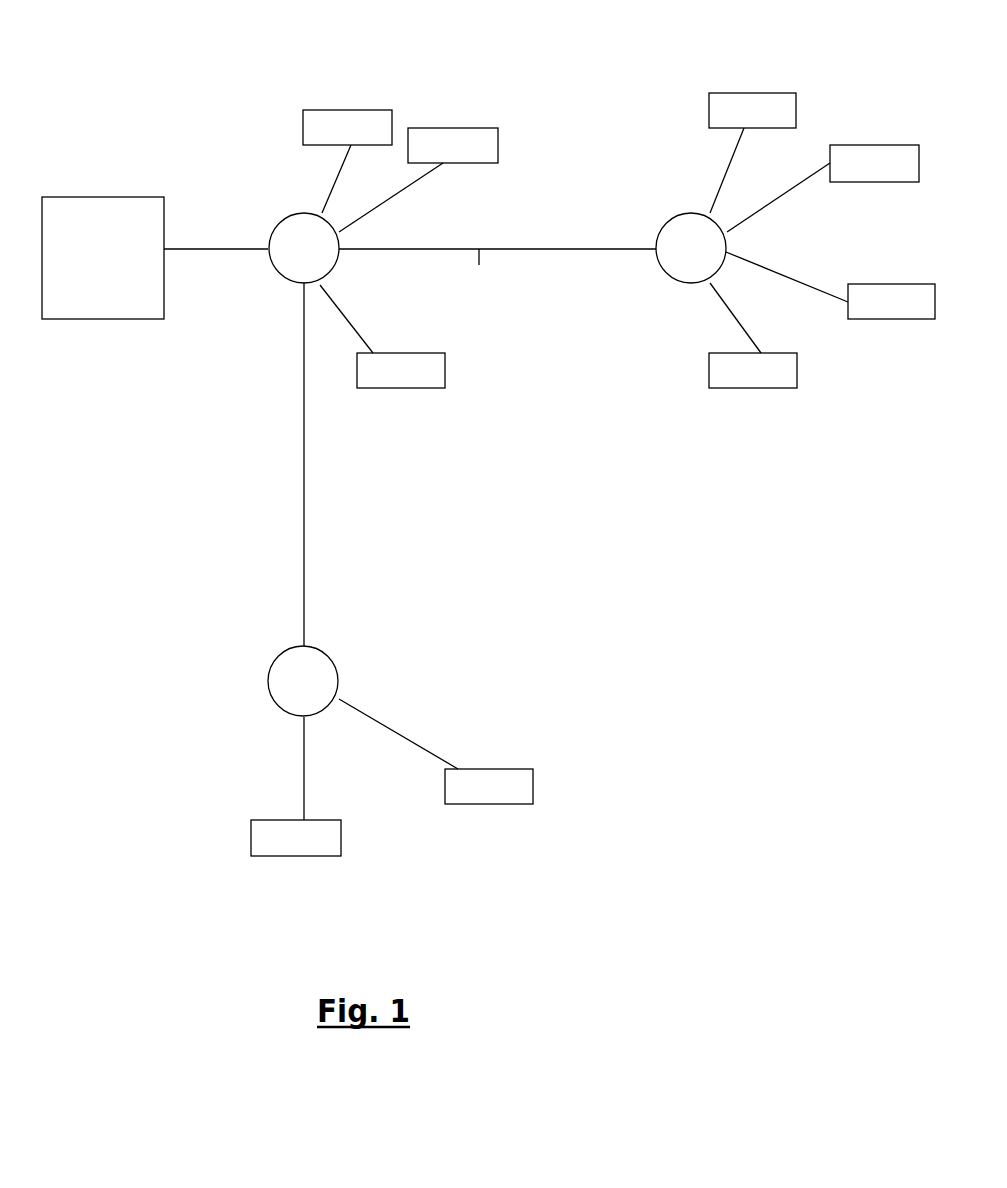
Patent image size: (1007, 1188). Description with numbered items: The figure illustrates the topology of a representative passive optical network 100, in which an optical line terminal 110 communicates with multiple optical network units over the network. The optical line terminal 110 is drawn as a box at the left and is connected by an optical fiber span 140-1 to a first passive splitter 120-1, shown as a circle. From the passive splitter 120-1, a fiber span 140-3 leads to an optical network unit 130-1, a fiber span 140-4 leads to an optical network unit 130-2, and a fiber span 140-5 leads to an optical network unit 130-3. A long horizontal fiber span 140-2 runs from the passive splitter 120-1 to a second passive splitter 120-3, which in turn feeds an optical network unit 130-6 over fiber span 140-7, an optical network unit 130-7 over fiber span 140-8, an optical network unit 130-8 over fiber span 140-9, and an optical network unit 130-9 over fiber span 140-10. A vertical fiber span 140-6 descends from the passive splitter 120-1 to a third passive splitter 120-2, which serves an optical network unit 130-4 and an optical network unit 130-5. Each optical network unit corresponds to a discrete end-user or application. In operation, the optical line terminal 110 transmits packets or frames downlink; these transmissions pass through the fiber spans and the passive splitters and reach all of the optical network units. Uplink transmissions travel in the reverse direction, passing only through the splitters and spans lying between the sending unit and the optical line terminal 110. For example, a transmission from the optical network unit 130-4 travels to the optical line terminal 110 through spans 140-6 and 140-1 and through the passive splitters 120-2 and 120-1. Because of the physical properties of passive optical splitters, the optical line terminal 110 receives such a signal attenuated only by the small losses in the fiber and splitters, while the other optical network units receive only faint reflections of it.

The passive optical network 100 is at (533, 75).
The optical line terminal 110 is at (103, 258).
The passive splitter 120-1 is at (268, 268).
The passive splitter 120-2 is at (268, 700).
The passive splitter 120-3 is at (657, 268).
The optical network unit 130-1 is at (347, 127).
The optical network unit 130-2 is at (453, 145).
The optical network unit 130-3 is at (401, 370).
The optical network unit 130-4 is at (489, 786).
The optical network unit 130-5 is at (296, 838).
The optical network unit 130-6 is at (752, 110).
The optical network unit 130-7 is at (874, 163).
The optical network unit 130-8 is at (891, 301).
The optical network unit 130-9 is at (753, 370).
The optical fiber span 140-1 is at (217, 247).
The optical fiber span 140-2 is at (497, 274).
The optical fiber span 140-3 is at (320, 179).
The optical fiber span 140-4 is at (410, 198).
The optical fiber span 140-5 is at (320, 335).
The optical fiber span 140-6 is at (303, 441).
The optical fiber span 140-7 is at (725, 163).
The optical fiber span 140-8 is at (797, 198).
The optical fiber span 140-9 is at (782, 264).
The optical fiber span 140-10 is at (709, 301).